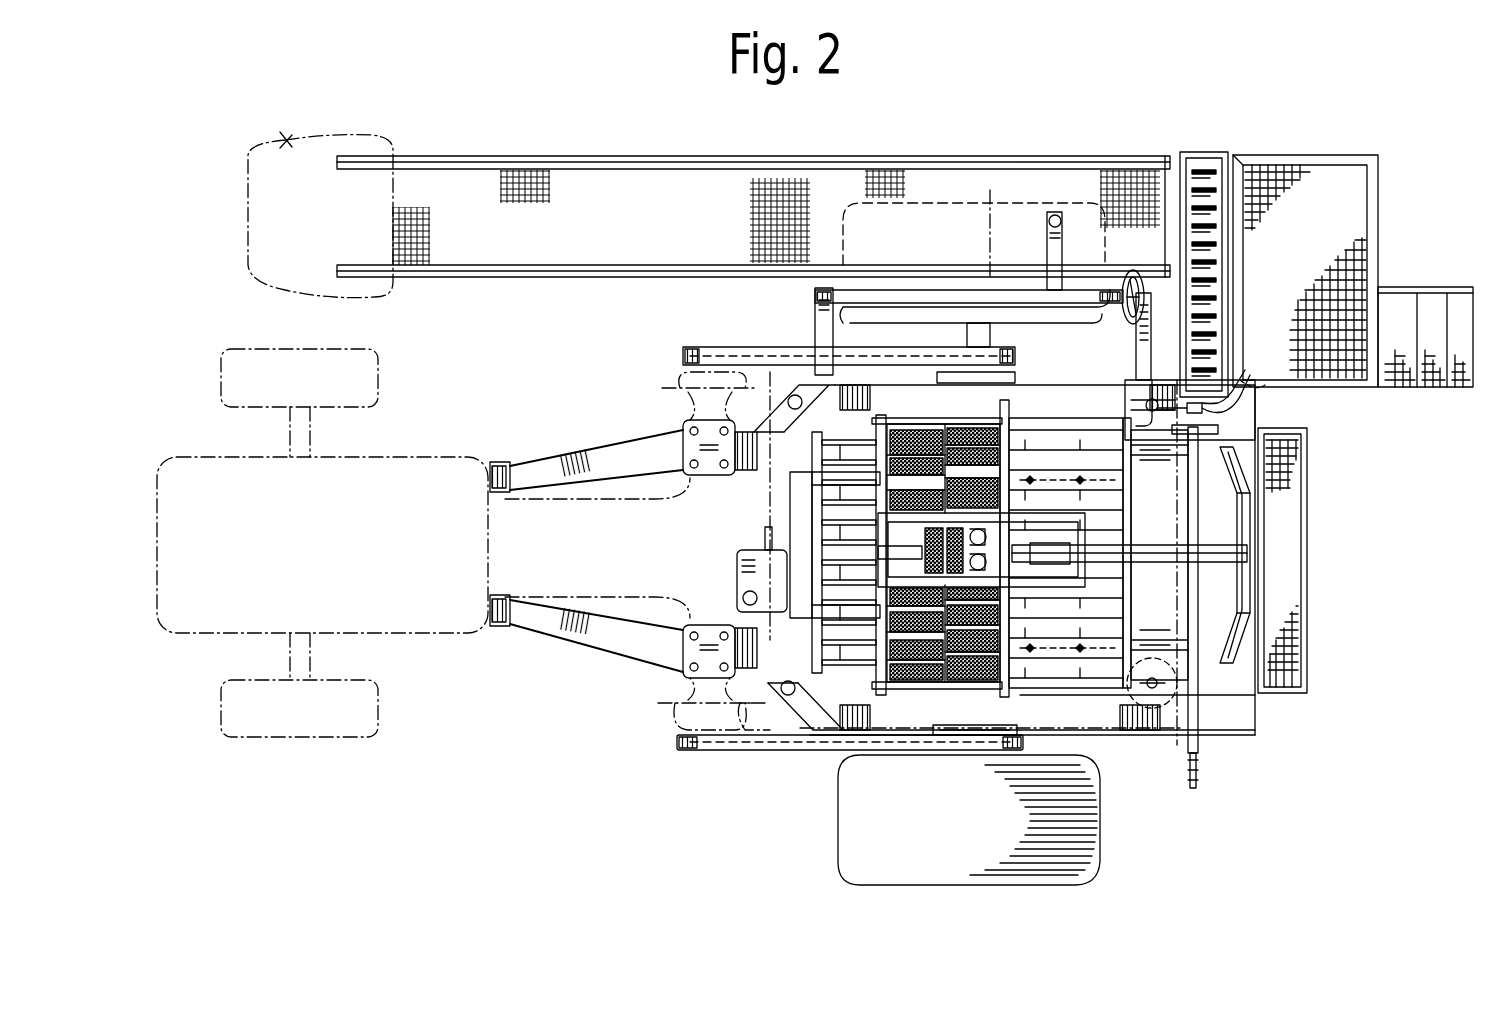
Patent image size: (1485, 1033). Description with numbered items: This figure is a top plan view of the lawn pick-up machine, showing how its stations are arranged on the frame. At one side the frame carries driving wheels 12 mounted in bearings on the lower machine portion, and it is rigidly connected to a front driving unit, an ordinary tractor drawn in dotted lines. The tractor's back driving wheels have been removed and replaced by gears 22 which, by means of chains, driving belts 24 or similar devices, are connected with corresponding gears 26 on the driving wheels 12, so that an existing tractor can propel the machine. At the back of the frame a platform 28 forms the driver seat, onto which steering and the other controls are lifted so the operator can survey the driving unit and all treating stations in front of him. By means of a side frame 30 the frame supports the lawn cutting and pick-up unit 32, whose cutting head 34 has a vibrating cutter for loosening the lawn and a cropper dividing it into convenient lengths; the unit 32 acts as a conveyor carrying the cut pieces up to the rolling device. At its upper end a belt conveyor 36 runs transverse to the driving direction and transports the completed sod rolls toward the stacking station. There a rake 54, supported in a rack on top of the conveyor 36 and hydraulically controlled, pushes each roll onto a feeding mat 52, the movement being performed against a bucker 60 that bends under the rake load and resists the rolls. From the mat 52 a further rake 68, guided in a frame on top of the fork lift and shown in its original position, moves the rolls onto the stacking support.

The driving wheels 12 is at (845, 817).
The gears 22 is at (678, 741).
The driving belts 24 is at (780, 752).
The gears 26 is at (1030, 717).
The platform 28 is at (1352, 185).
The side frame 30 is at (820, 322).
The lawn cutting and pick-up unit 32 is at (547, 142).
The cutting head 34 is at (282, 133).
The belt conveyor 36 is at (1180, 158).
The feeding mat 52 is at (1283, 467).
The rake 54 is at (1170, 400).
The bucker 60 is at (1233, 422).
The rake 68 is at (1240, 529).